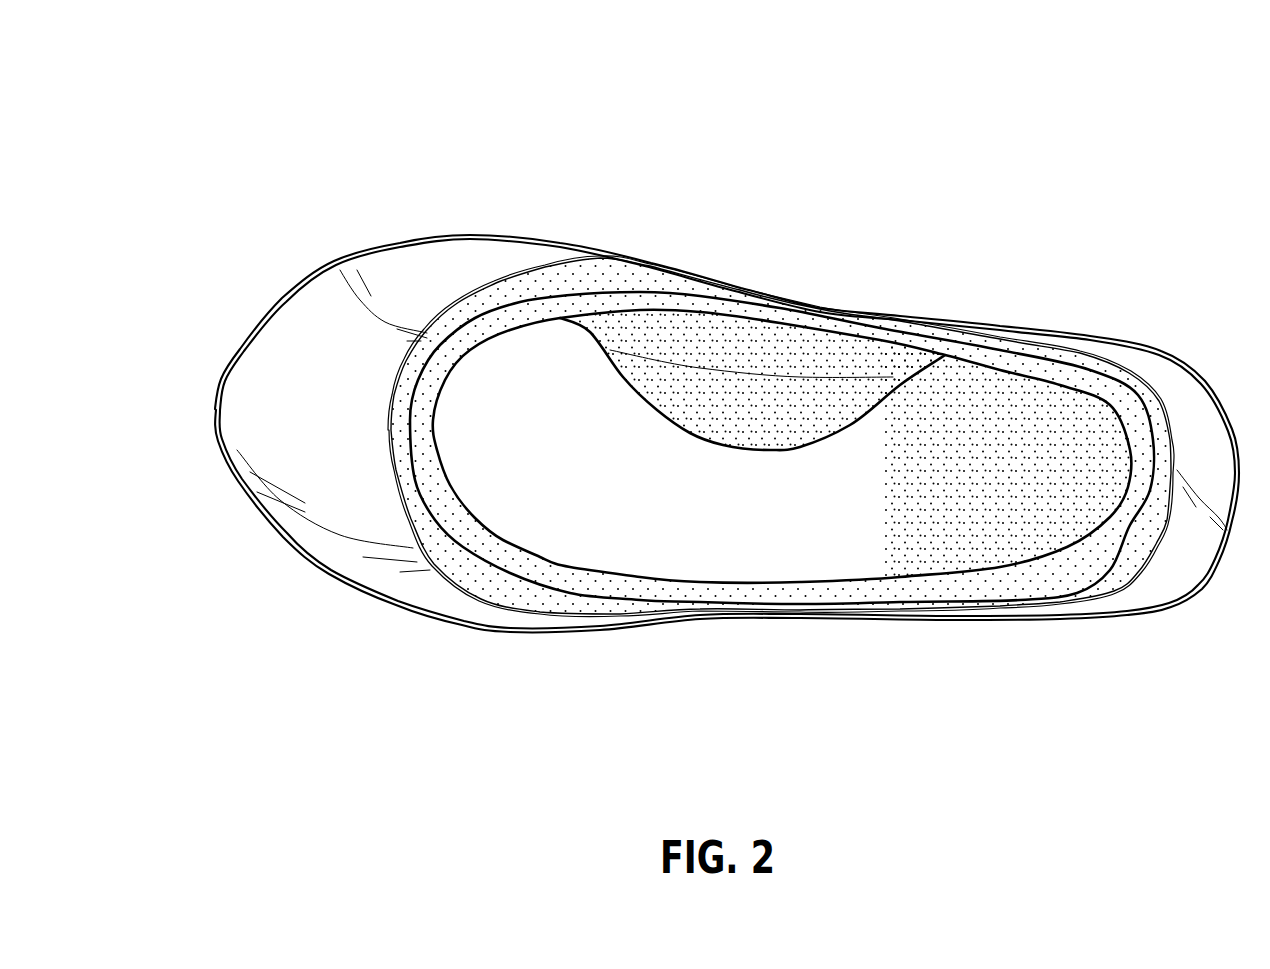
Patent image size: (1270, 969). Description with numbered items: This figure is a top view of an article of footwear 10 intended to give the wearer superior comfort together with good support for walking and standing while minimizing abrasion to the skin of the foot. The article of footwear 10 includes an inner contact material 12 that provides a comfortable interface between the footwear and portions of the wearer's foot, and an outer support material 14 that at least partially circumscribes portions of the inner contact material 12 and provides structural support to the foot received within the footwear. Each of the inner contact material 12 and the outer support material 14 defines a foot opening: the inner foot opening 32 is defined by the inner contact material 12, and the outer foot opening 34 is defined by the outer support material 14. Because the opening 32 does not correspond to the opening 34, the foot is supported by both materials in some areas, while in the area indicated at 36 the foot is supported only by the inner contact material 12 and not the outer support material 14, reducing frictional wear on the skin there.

The article of footwear 10 is at (268, 177).
The inner contact material 12 is at (663, 277).
The outer support material 14 is at (463, 250).
The inner foot opening 32 is at (822, 313).
The outer foot opening 34 is at (1091, 339).
The area supported only by inner contact material 36 is at (518, 602).